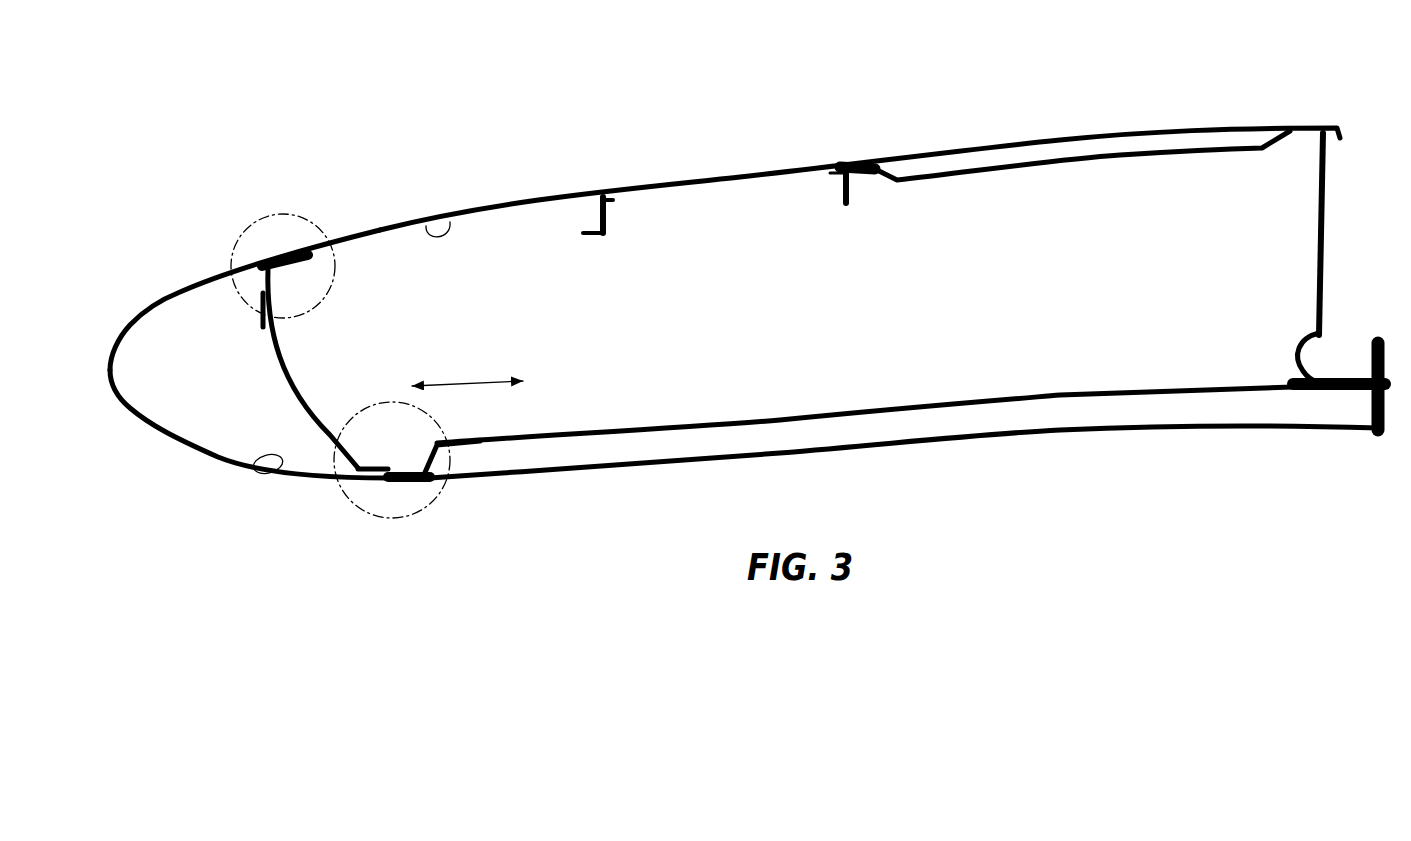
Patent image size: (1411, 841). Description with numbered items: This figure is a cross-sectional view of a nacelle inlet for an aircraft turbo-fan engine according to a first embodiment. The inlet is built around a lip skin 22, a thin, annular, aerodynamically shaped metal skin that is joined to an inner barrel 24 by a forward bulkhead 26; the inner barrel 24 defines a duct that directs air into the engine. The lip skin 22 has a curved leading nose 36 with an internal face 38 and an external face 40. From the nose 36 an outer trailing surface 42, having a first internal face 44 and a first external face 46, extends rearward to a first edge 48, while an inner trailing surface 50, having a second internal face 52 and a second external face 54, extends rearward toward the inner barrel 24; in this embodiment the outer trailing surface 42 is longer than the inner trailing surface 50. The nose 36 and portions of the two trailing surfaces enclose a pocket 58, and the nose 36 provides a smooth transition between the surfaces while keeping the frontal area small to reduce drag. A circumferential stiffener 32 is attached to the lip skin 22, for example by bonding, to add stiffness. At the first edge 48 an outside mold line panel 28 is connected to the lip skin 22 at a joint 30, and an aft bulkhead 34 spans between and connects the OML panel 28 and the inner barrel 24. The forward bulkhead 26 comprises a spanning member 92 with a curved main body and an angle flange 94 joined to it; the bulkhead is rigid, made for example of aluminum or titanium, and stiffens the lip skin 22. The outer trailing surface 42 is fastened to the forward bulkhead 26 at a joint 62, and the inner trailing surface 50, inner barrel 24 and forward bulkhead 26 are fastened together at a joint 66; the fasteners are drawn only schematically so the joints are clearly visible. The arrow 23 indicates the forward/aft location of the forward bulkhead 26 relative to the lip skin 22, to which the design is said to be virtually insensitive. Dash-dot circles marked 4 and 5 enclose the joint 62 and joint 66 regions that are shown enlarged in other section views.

The lip skin 22 is at (181, 288).
The arrow 23 is at (448, 384).
The inner barrel 24 is at (1069, 440).
The forward bulkhead 26 is at (334, 381).
The outside mold line (OML) panel 28 is at (1092, 133).
The joint 30 is at (850, 163).
The stiffener 32 is at (606, 238).
The aft bulkhead 34 is at (1327, 246).
The nose 36 is at (113, 388).
The internal face 38 is at (168, 443).
The external face 40 is at (137, 415).
The outer trailing surface 42 is at (490, 214).
The first internal face 44 is at (448, 222).
The first external face 46 is at (541, 204).
The first edge 48 is at (844, 163).
The inner trailing surface 50 is at (306, 480).
The second internal face 52 is at (255, 463).
The second external face 54 is at (282, 473).
The pocket 58 is at (218, 378).
The joint 62 is at (277, 236).
The joint 66 is at (387, 499).
The spanning member 92 is at (287, 378).
The angle flange 94 is at (280, 283).
The section line 4 is at (239, 226).
The section line 5 is at (346, 507).